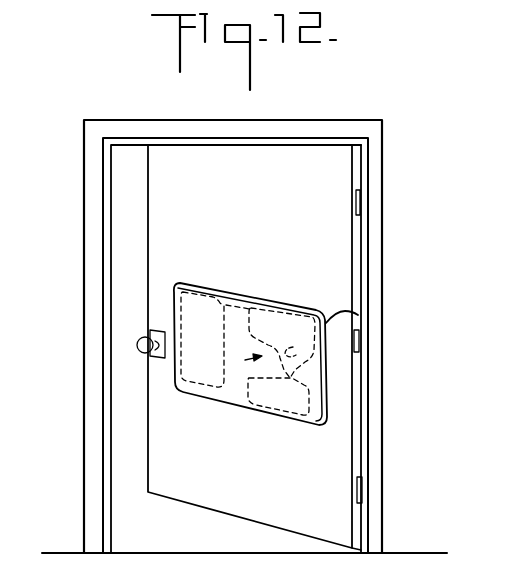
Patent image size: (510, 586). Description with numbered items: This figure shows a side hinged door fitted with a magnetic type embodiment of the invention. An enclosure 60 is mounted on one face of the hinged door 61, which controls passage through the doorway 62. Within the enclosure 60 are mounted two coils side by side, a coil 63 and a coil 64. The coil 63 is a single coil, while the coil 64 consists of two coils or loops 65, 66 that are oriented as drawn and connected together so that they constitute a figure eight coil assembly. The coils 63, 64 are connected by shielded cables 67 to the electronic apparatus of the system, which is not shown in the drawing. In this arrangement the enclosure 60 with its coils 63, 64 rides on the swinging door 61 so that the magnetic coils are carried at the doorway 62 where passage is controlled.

The enclosure 60 is at (249, 287).
The hinged door 61 is at (182, 500).
The doorway 62 is at (376, 236).
The coil 63 is at (201, 288).
The coil 64 is at (262, 356).
The loop 65 is at (292, 306).
The loop 66 is at (273, 416).
The shielded cable 67 is at (337, 312).